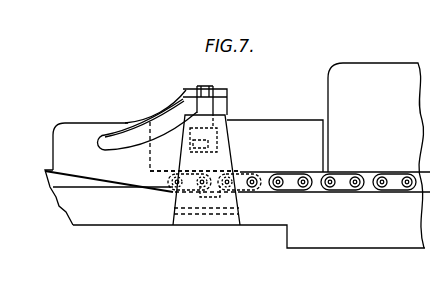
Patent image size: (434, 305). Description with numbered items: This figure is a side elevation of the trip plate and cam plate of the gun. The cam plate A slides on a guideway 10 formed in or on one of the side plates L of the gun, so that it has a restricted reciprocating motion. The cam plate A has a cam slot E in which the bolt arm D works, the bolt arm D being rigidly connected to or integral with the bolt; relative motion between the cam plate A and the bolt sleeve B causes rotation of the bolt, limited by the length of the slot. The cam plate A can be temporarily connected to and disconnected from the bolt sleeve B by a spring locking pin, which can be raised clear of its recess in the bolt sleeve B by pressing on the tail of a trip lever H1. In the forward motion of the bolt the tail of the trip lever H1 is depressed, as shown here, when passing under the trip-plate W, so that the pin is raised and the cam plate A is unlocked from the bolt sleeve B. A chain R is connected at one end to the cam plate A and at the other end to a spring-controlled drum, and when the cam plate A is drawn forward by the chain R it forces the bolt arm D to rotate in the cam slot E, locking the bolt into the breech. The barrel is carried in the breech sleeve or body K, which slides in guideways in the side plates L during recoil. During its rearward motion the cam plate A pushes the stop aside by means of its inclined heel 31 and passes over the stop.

The cam plate A is at (146, 146).
The cam slot E is at (125, 147).
The bolt arm D is at (200, 89).
The bolt sleeve B is at (262, 120).
The trip-plate W is at (237, 163).
The trip lever H1 is at (212, 145).
The breech sleeve or body K is at (371, 63).
The chain R is at (385, 194).
The side plate L is at (248, 226).
The guideway 10 is at (122, 188).
The inclined heel 31 is at (95, 180).